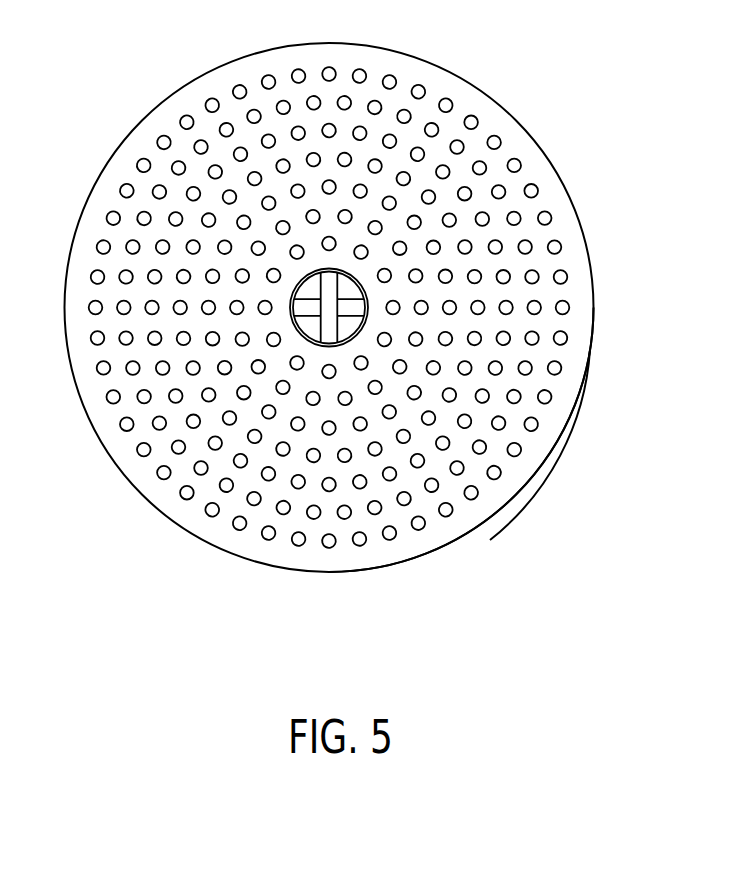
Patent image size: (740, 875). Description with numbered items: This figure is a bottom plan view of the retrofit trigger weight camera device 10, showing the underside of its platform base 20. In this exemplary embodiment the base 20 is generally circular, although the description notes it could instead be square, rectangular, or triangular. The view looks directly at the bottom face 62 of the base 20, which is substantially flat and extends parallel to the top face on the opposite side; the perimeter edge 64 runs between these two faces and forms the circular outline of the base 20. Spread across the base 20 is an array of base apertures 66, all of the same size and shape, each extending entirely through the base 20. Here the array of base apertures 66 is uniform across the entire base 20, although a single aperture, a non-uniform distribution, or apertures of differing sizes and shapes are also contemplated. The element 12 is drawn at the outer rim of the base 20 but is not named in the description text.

The filter plate assembly 10 is at (99, 94).
The plate body 12 is at (609, 264).
The central hub 20 is at (392, 579).
The plate surface region 62 is at (558, 422).
The outer peripheral edge 64 is at (540, 468).
The apertures 66 is at (447, 105).